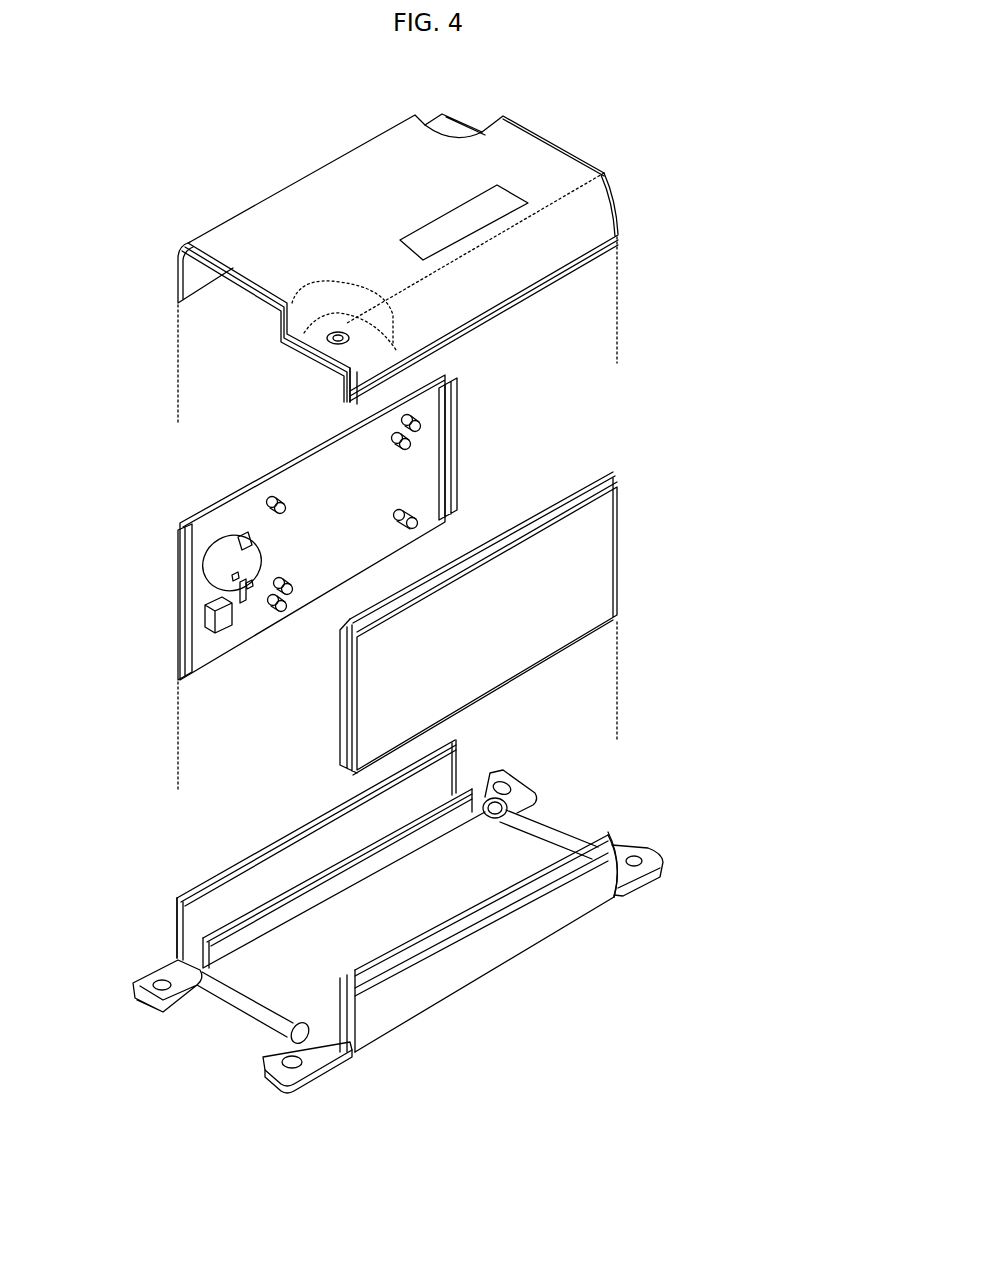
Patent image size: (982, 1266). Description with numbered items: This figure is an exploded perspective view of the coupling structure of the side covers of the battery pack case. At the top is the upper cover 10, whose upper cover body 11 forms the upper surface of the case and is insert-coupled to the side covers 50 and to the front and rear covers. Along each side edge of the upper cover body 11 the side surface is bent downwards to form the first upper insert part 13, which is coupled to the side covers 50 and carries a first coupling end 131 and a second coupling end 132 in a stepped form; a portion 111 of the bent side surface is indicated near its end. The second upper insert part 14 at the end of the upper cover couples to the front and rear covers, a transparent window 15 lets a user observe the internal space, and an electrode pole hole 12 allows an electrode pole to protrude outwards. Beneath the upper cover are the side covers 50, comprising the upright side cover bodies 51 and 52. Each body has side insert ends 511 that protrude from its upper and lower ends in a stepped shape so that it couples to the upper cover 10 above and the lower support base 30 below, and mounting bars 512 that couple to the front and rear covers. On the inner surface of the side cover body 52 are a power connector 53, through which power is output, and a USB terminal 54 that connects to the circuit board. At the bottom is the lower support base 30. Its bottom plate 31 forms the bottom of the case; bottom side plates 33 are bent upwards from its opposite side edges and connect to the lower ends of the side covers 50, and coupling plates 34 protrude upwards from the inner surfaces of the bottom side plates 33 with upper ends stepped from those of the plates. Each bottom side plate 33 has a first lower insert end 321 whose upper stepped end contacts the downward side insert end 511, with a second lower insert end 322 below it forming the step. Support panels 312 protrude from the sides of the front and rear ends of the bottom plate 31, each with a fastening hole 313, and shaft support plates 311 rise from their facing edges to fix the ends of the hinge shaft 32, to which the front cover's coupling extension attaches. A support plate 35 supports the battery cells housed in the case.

The upper cover 10 is at (536, 104).
The upper cover body 11 is at (345, 180).
The side wall portion 111 is at (597, 212).
The electrode pole hole 12 is at (317, 350).
The first upper insert part 13 is at (664, 331).
The first coupling end 131 is at (563, 272).
The second coupling end 132 is at (604, 254).
The second upper insert part 14 is at (221, 262).
The transparent window 15 is at (476, 222).
The lower support base 30 is at (636, 776).
The bottom plate 31 is at (298, 937).
The shaft support plate 311 is at (287, 1037).
The support panel 312 is at (332, 1062).
The fastening hole 313 is at (280, 1086).
The hinge shaft 32 is at (215, 1003).
The first lower insert end 321 is at (663, 882).
The second lower insert end 322 is at (568, 900).
The bottom side plate 33 is at (455, 977).
The coupling plate 34 is at (223, 903).
The support plate 35 is at (508, 816).
The side cover 50 is at (682, 528).
The side cover body 51 is at (602, 586).
The side insert end 511 is at (452, 370).
The mounting bar 512 is at (178, 567).
The side cover body 52 is at (308, 476).
The power connector 53 is at (226, 588).
The USB terminal 54 is at (220, 633).